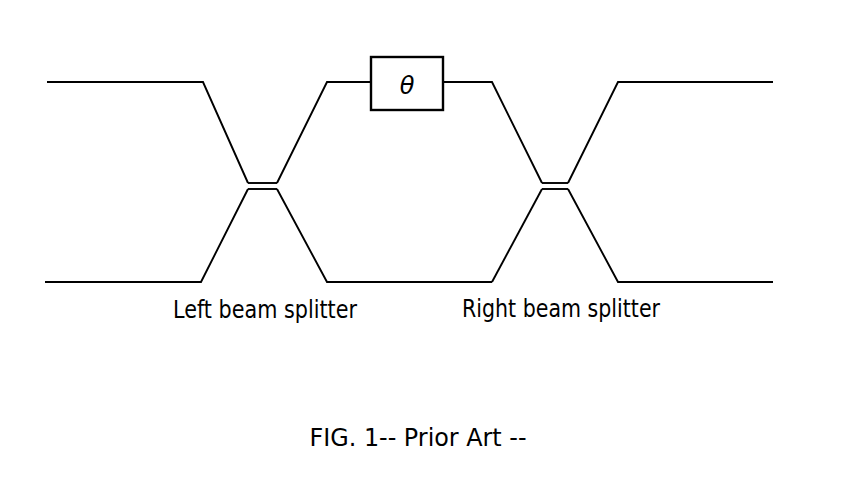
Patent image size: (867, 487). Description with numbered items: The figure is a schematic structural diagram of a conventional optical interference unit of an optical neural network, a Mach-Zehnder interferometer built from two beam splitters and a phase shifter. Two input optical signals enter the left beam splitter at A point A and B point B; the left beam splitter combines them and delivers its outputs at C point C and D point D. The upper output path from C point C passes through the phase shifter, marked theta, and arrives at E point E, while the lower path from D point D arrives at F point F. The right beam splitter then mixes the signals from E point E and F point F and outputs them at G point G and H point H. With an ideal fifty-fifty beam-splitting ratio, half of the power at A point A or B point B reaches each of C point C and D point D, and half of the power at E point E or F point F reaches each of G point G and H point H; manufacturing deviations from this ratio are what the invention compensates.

The A point A is at (147, 124).
The B point B is at (146, 235).
The C point C is at (324, 124).
The D point D is at (384, 235).
The E point E is at (492, 124).
The F point F is at (503, 235).
The G point G is at (670, 124).
The H point H is at (670, 235).